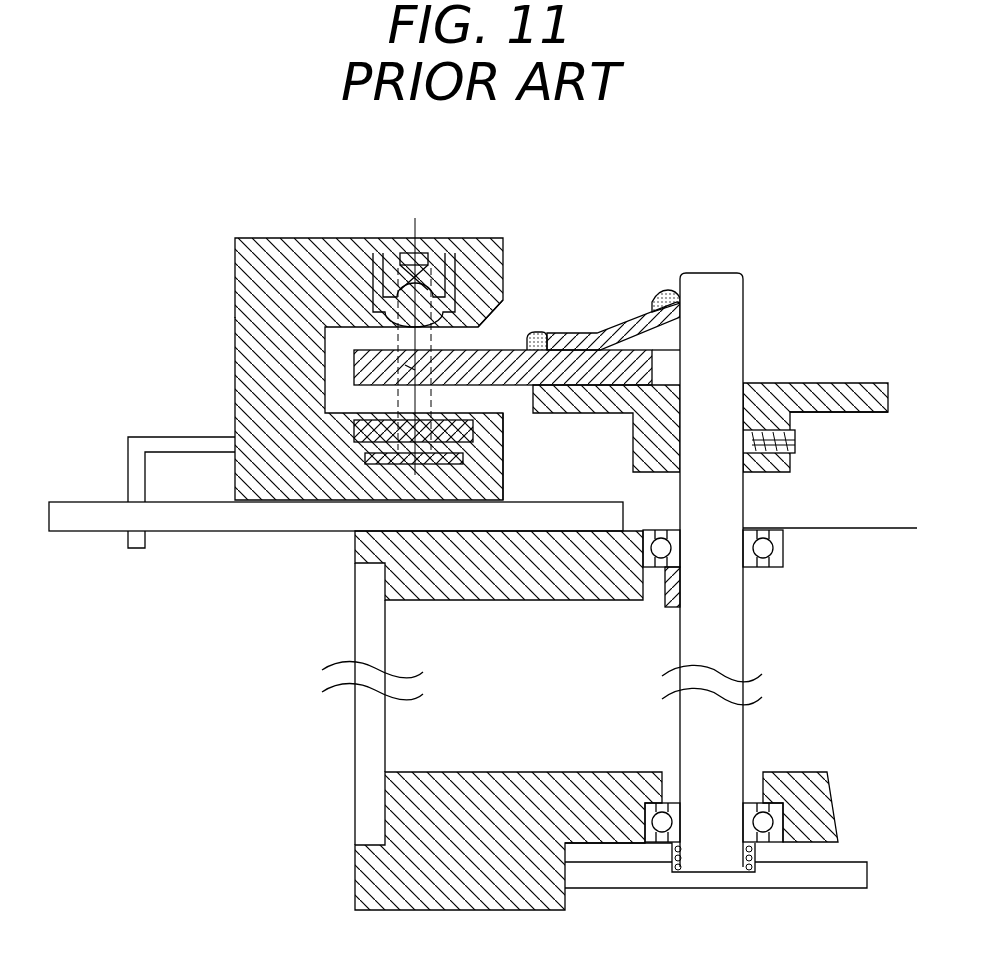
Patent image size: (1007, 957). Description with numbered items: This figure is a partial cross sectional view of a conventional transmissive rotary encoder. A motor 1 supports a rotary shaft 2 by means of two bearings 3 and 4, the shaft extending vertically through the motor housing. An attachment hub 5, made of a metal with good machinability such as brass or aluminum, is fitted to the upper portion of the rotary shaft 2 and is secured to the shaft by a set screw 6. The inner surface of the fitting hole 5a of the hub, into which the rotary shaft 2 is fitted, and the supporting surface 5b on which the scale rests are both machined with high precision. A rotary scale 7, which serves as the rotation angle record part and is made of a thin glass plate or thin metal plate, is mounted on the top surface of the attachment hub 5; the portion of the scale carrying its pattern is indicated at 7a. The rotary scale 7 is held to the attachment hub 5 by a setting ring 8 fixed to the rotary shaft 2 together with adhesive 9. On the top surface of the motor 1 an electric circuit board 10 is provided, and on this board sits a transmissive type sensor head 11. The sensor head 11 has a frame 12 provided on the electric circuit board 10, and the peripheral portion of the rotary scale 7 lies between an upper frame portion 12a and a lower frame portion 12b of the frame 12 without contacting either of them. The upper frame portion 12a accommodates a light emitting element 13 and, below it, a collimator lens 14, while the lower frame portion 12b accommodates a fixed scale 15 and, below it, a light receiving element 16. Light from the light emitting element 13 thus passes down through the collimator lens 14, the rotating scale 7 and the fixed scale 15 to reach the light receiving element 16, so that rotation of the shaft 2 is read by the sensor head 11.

The motor 1 is at (355, 866).
The rotary shaft 2 is at (713, 290).
The bearing 3 is at (783, 548).
The bearing 4 is at (783, 822).
The attachment hub 5 is at (877, 383).
The fitting hole 5a is at (735, 396).
The supporting surface 5b is at (825, 383).
The set screw 6 is at (797, 440).
The rotary scale 7 is at (565, 362).
The slit pattern of code disc 7a is at (410, 370).
The setting ring 8 is at (617, 327).
The adhesive 9 is at (662, 290).
The electric circuit board 10 is at (85, 513).
The sensor head 11 is at (236, 318).
The frame 12 is at (273, 238).
The upper frame portion 12a is at (477, 250).
The lower frame portion 12b is at (503, 455).
The light emitting element 13 is at (405, 251).
The collimator lens 14 is at (445, 303).
The fixed scale 15 is at (353, 427).
The light receiving element 16 is at (375, 462).